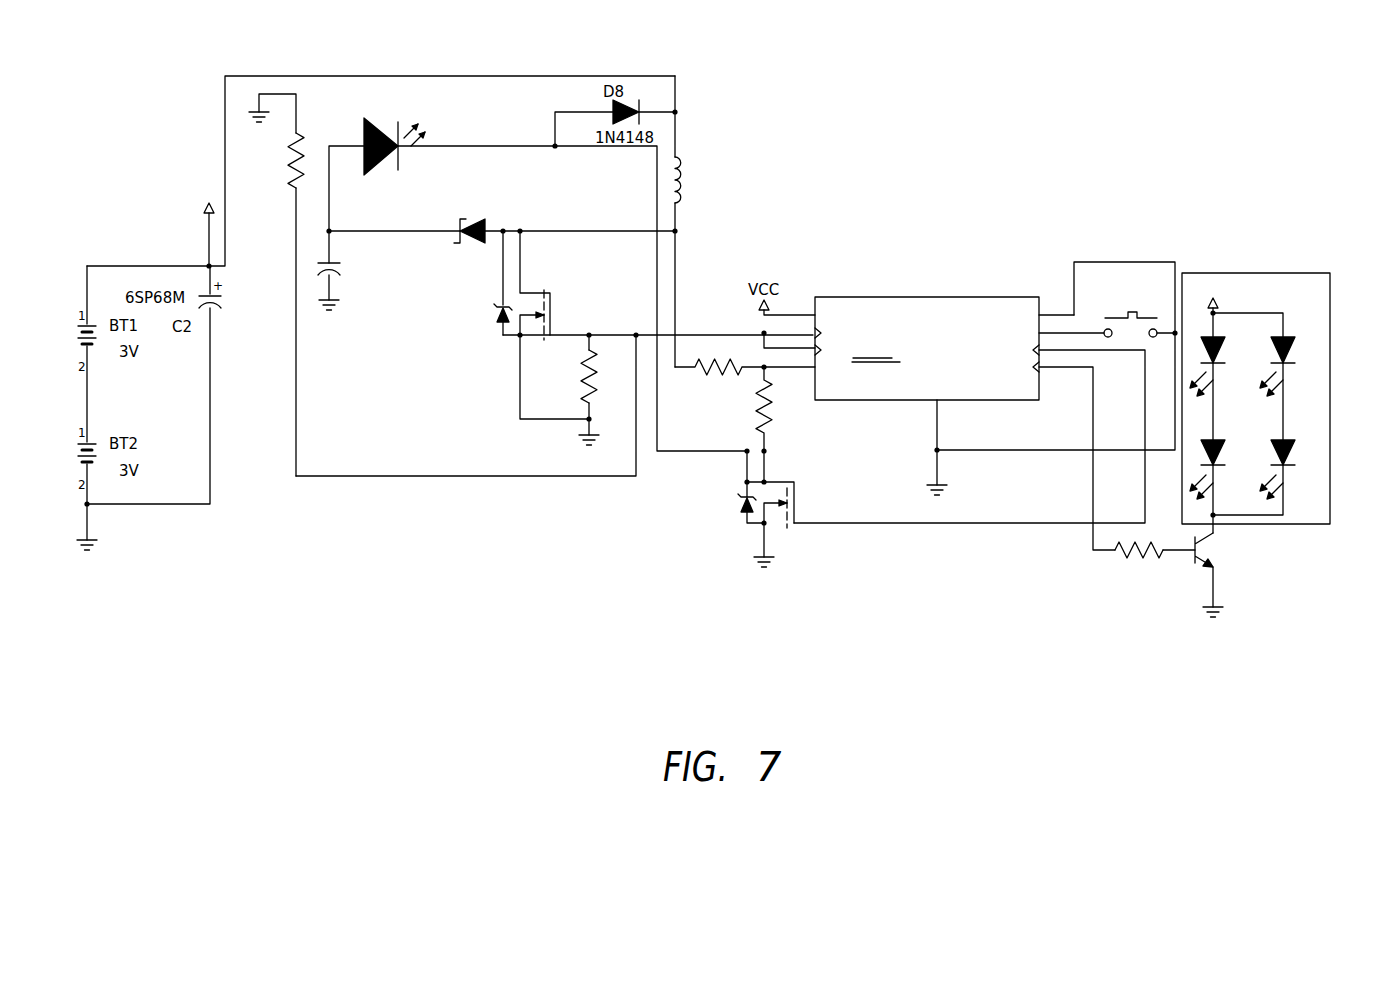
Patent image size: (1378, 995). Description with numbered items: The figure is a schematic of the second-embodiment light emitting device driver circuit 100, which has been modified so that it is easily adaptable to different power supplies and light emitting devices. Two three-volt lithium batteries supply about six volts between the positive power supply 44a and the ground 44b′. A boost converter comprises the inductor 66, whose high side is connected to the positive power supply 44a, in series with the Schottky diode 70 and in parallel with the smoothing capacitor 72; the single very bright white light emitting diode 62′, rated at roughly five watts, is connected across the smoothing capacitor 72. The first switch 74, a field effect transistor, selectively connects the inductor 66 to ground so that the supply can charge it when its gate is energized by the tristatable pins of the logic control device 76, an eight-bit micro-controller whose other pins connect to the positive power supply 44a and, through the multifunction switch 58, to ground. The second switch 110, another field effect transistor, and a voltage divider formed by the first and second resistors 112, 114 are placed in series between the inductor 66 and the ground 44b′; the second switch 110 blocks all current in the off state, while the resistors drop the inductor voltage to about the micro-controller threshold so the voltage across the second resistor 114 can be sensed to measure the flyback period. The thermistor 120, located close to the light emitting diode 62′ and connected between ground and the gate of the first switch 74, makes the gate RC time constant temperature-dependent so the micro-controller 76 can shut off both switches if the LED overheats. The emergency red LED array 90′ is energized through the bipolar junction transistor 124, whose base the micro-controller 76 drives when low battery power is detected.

The light emitting device driver circuit 100 is at (1143, 134).
The positive power supply 44a is at (190, 186).
The ground 44b′ is at (97, 544).
The thermistor 120 is at (300, 140).
The light emitting diode 62′ is at (365, 168).
The smoothing capacitor 72 is at (339, 283).
The Schottky diode 70 is at (462, 240).
The first switch 74 is at (553, 303).
The inductor 66 is at (683, 162).
The first resistor 112 is at (738, 362).
The second resistor 114 is at (757, 411).
The second switch 110 is at (800, 493).
The logic control device 76 is at (1022, 297).
The multifunction switch 58 is at (1151, 305).
The emergency red LED array 90′ is at (1258, 274).
The bipolar junction transistor 124 is at (1195, 560).